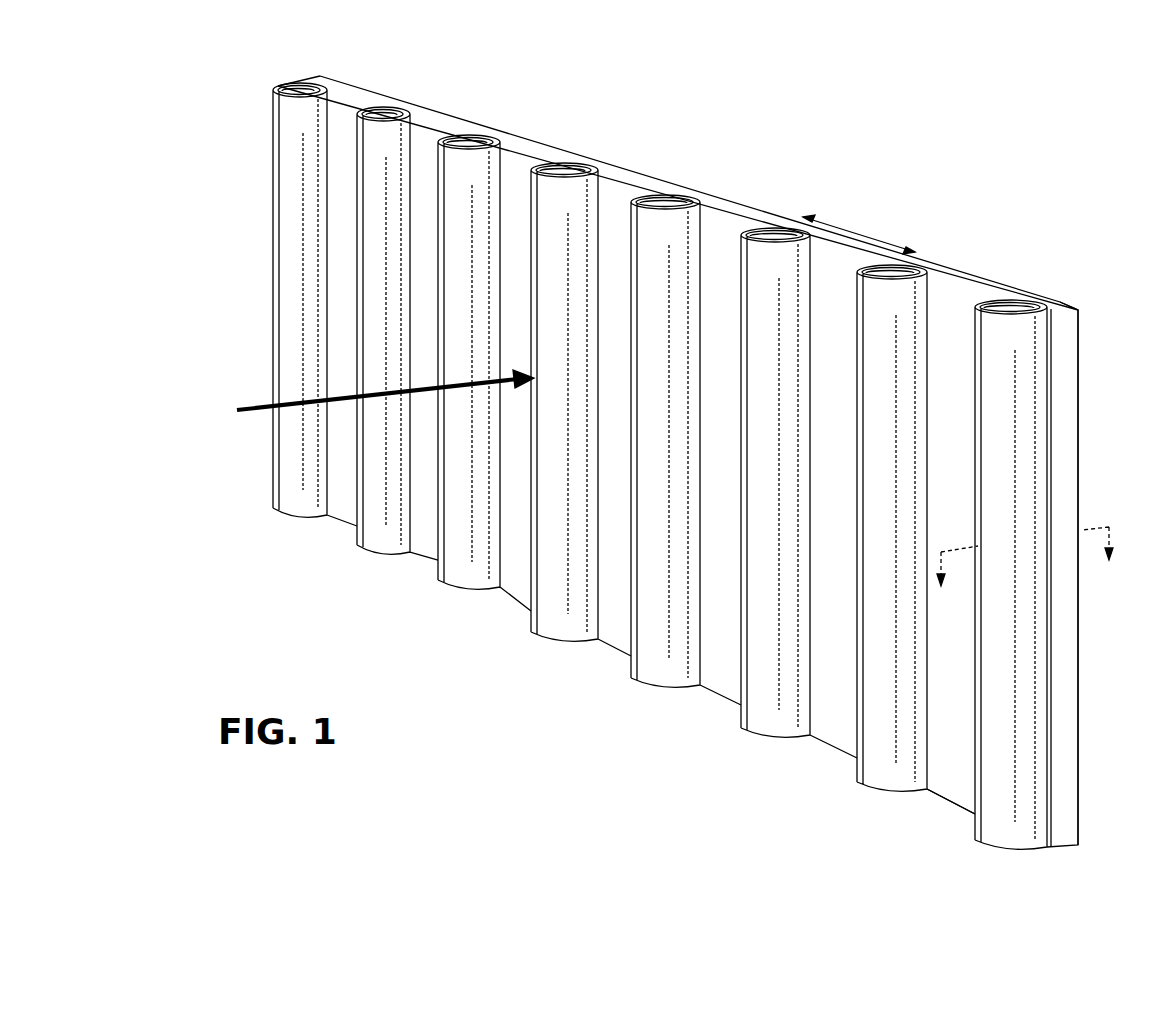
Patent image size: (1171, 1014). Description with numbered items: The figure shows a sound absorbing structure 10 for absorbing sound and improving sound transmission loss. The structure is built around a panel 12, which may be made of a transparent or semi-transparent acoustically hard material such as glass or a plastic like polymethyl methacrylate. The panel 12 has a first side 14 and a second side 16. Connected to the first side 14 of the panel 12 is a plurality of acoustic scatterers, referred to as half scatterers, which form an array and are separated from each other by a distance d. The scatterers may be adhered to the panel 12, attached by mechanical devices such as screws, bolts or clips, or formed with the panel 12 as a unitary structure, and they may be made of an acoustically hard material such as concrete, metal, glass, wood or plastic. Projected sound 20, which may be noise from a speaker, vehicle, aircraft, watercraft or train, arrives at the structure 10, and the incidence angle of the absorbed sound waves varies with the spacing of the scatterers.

The sound absorbing structure 10 is at (788, 167).
The panel 12 is at (1000, 283).
The first side 14 is at (948, 318).
The second side 16 is at (1062, 303).
The projected sound 20 is at (253, 413).